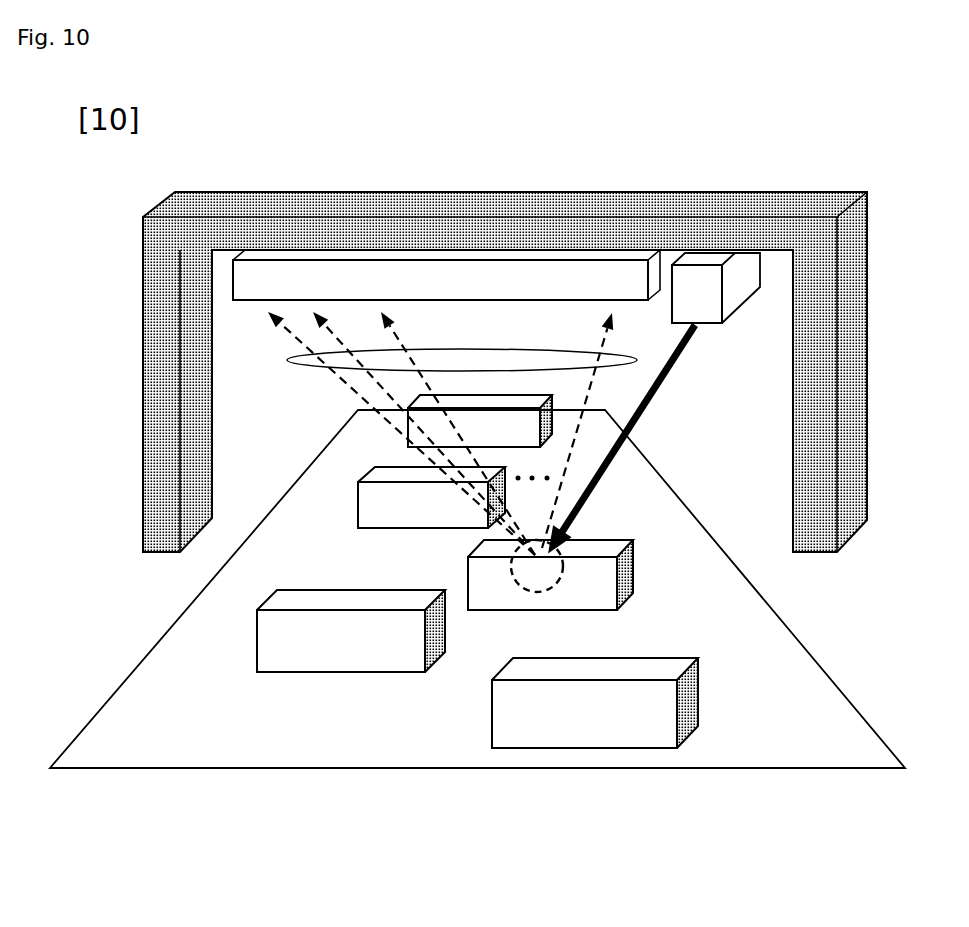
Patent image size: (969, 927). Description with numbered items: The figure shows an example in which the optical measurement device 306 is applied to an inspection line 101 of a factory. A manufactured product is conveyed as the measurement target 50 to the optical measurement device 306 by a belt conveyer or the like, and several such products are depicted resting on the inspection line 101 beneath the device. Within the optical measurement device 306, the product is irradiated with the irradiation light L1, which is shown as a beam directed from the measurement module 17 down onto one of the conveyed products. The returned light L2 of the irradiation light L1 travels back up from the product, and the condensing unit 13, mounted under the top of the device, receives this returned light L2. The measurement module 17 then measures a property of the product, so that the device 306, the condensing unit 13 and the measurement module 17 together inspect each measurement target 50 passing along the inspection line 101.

The optical measurement device 306 is at (728, 192).
The condensing unit 13 is at (380, 268).
The measurement module 17 is at (740, 305).
The irradiation light L1 is at (655, 395).
The returned light L2 is at (312, 368).
The inspection line 101 is at (210, 768).
The measurement target 50 is at (600, 748).